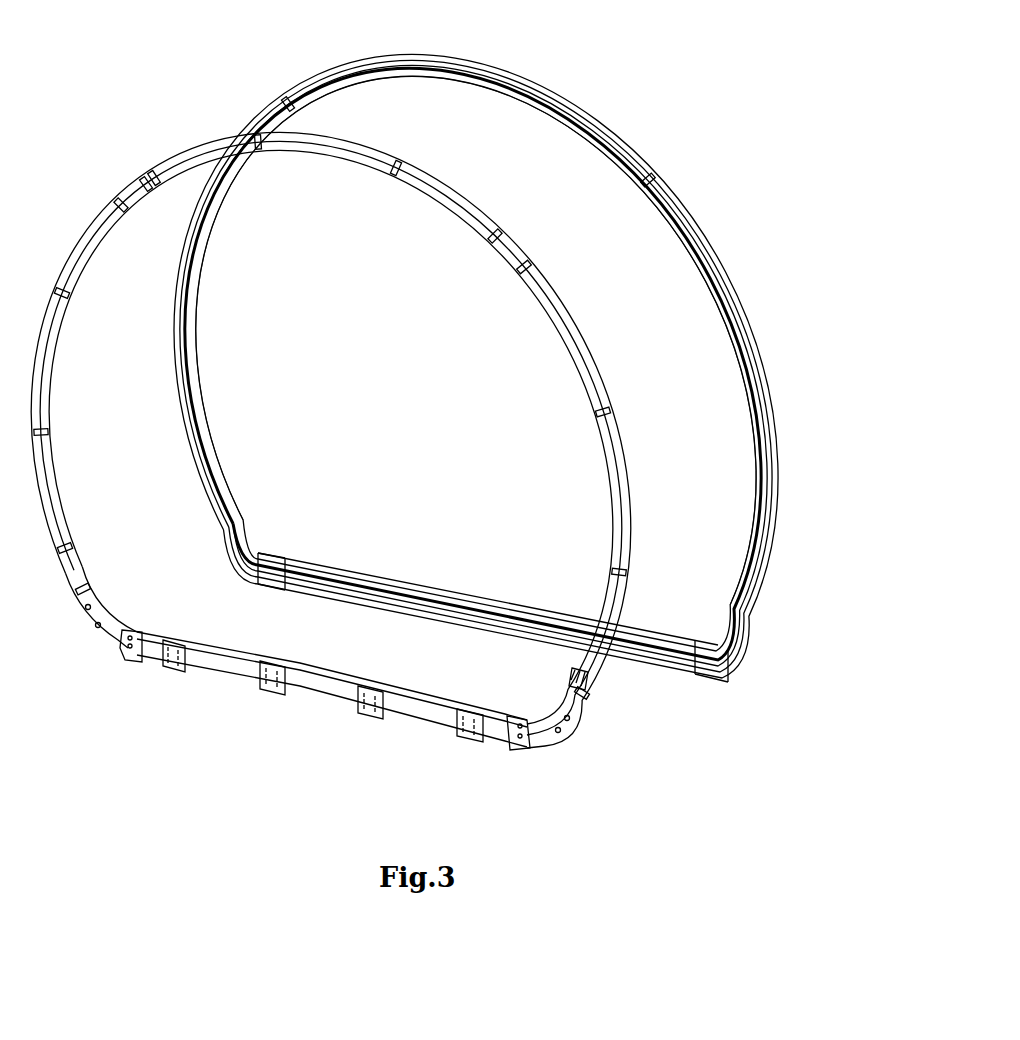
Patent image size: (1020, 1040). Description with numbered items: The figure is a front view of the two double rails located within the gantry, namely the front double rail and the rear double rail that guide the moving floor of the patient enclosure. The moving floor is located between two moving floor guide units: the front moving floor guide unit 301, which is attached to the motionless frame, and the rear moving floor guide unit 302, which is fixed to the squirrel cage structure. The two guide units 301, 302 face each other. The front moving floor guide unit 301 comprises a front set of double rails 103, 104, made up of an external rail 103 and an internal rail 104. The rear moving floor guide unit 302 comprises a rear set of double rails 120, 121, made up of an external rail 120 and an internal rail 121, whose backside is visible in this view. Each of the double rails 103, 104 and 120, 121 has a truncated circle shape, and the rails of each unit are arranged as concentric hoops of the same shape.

The front moving floor guide unit 301 is at (660, 163).
The rear moving floor guide unit 302 is at (578, 308).
The external rail 103 is at (737, 327).
The internal rail 104 is at (740, 347).
The external rail 120 is at (602, 667).
The internal rail 121 is at (580, 697).